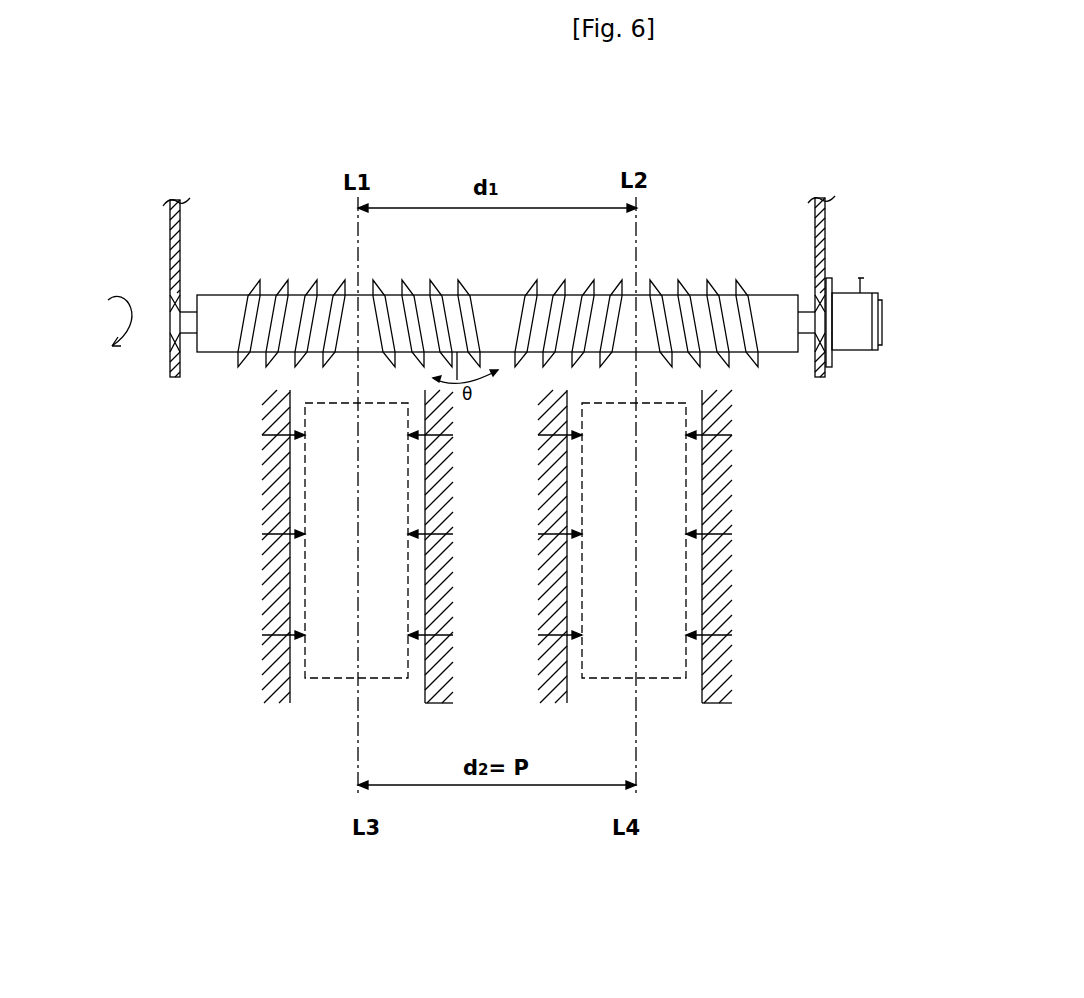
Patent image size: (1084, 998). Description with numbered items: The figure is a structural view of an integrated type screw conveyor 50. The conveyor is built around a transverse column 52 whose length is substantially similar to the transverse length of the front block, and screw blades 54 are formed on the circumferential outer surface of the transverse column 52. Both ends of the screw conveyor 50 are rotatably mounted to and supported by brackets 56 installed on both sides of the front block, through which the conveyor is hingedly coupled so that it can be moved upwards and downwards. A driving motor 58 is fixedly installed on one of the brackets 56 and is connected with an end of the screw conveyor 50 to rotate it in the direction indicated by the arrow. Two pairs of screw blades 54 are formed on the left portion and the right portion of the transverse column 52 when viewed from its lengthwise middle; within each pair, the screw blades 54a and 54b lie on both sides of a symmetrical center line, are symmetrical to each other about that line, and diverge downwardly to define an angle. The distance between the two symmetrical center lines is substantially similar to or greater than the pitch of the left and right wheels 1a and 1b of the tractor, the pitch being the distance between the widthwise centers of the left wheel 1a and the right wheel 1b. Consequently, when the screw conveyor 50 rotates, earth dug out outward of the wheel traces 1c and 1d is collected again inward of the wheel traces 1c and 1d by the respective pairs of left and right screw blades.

The screw conveyor 50 is at (262, 250).
The transverse column 52 is at (772, 305).
The screw blades 54 is at (498, 577).
The left screw blade 54a is at (282, 292).
The right screw blade 54b is at (440, 292).
The brackets 56 is at (175, 238).
The driving motor 58 is at (857, 352).
The left wheel 1a is at (328, 680).
The right wheel 1b is at (660, 680).
The left wheel trace 1c is at (272, 665).
The right wheel trace 1d is at (708, 665).